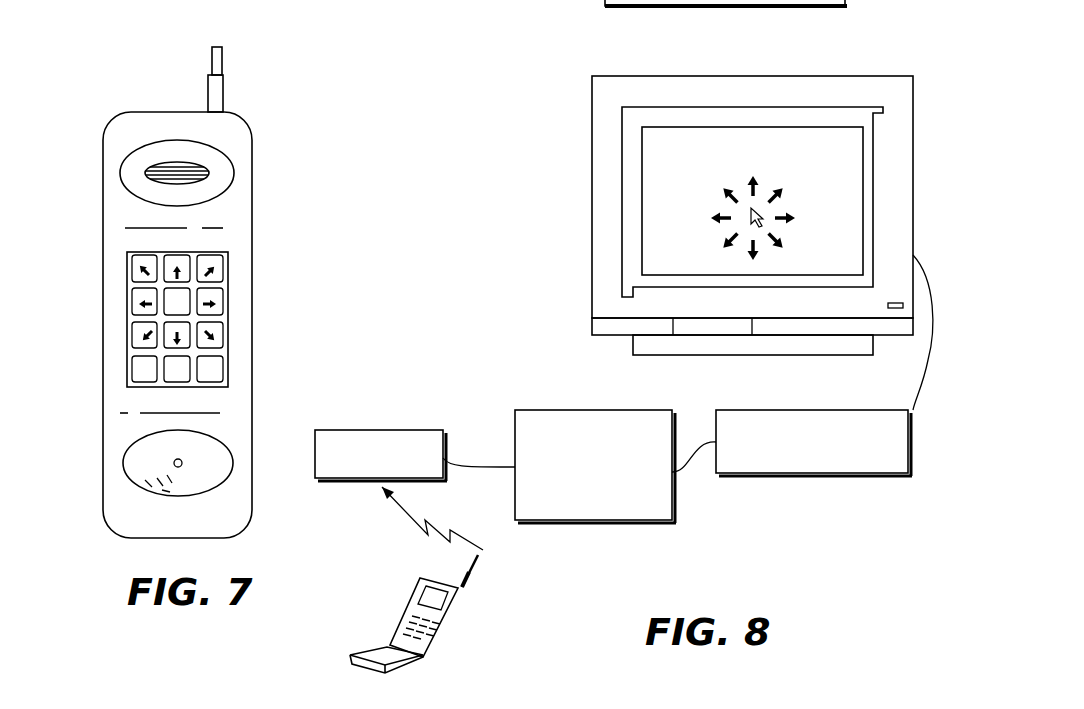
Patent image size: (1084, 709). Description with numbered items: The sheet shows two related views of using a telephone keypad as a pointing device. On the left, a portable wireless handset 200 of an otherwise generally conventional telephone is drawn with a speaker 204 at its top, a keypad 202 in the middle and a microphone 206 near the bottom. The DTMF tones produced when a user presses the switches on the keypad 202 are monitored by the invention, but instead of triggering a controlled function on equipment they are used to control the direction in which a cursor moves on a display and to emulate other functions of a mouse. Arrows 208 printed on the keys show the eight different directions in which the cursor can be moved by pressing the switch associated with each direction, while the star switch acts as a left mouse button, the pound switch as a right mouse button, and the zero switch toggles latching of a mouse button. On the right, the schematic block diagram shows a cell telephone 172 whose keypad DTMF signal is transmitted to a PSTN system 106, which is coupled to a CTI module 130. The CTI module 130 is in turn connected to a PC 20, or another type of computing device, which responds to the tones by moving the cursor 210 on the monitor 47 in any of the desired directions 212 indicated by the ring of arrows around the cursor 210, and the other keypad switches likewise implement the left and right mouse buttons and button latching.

In FIG. 7, the portable handset 200 is at (252, 189).
In FIG. 7, the keypad 202 is at (228, 280).
In FIG. 7, the speaker 204 is at (207, 173).
In FIG. 7, the microphone 206 is at (181, 467).
In FIG. 7, the arrows 208 is at (216, 333).
In FIG. 8, the monitor 47 is at (592, 185).
In FIG. 8, the cursor 210 is at (757, 212).
In FIG. 8, the directions 212 is at (714, 253).
In FIG. 8, the PSTN system 106 is at (341, 430).
In FIG. 8, the CTI module 130 is at (545, 410).
In FIG. 8, the PC 20 is at (725, 410).
In FIG. 8, the cell telephone 172 is at (407, 620).